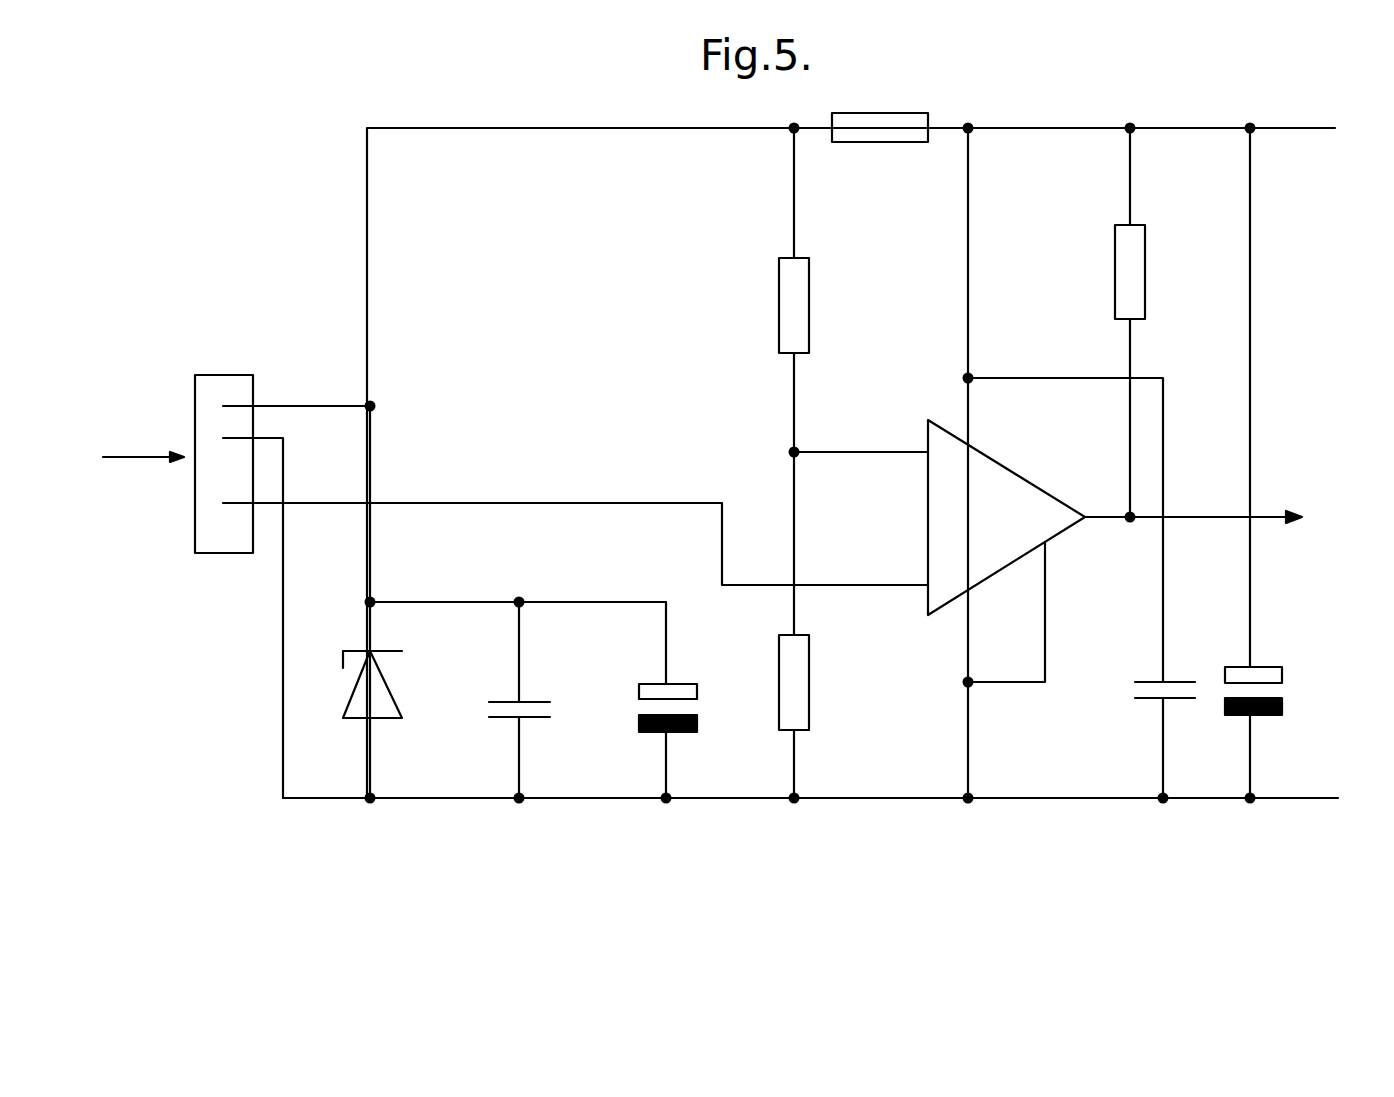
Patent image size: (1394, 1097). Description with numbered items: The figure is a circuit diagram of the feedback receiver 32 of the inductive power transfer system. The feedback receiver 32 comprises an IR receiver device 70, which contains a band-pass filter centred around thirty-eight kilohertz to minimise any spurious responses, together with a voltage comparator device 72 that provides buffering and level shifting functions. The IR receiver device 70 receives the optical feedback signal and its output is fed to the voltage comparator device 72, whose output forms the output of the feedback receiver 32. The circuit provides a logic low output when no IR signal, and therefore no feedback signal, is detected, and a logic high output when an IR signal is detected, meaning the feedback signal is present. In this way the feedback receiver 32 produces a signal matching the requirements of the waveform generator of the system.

The feedback receiver 32 is at (778, 859).
The IR receiver device 70 is at (225, 553).
The voltage comparator device 72 is at (1022, 485).